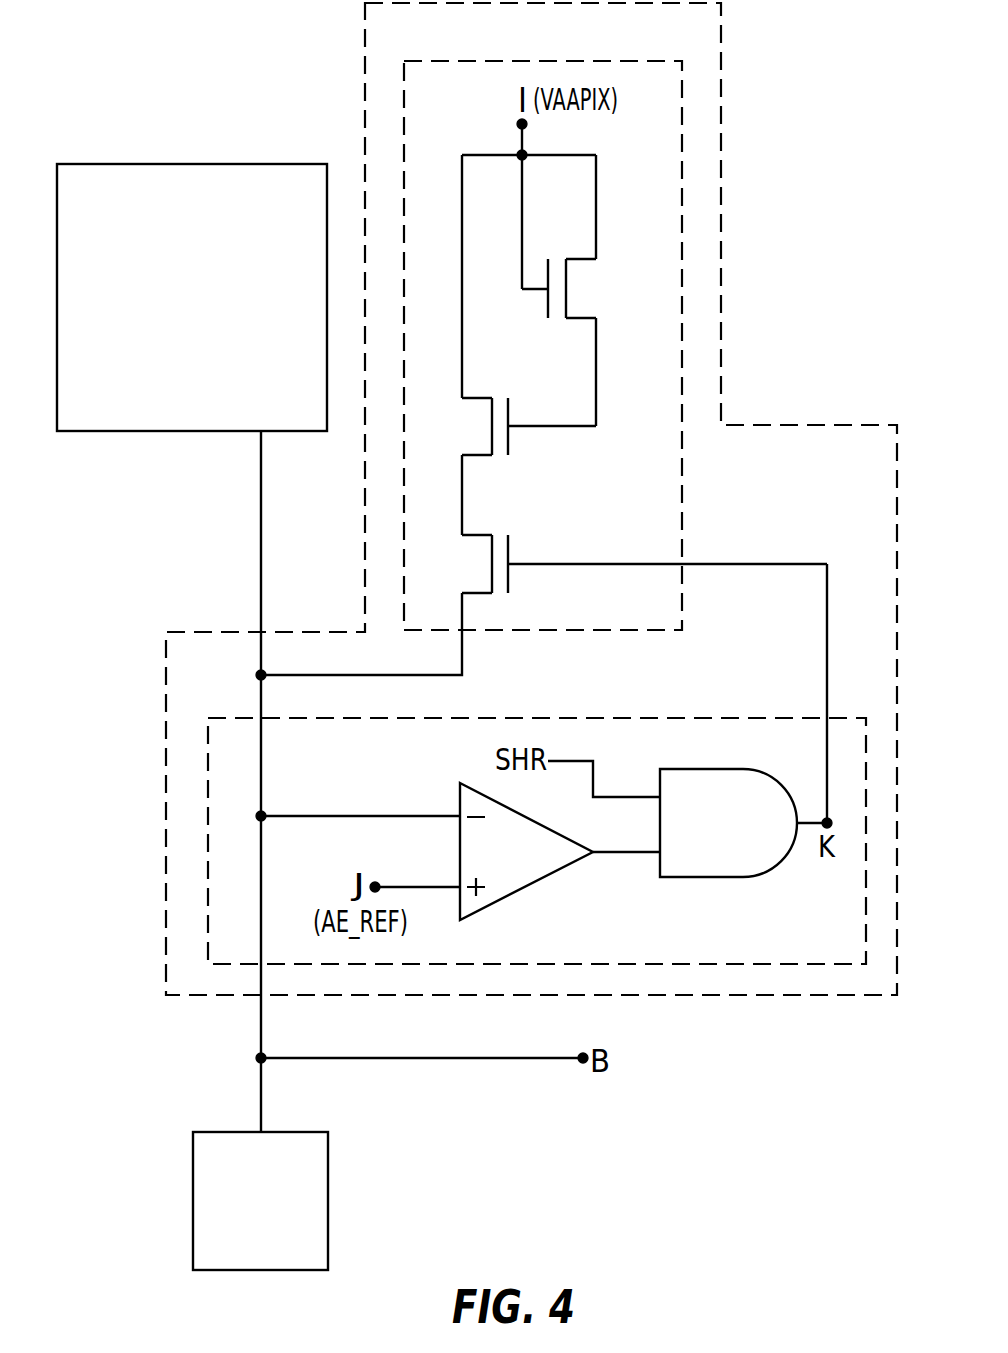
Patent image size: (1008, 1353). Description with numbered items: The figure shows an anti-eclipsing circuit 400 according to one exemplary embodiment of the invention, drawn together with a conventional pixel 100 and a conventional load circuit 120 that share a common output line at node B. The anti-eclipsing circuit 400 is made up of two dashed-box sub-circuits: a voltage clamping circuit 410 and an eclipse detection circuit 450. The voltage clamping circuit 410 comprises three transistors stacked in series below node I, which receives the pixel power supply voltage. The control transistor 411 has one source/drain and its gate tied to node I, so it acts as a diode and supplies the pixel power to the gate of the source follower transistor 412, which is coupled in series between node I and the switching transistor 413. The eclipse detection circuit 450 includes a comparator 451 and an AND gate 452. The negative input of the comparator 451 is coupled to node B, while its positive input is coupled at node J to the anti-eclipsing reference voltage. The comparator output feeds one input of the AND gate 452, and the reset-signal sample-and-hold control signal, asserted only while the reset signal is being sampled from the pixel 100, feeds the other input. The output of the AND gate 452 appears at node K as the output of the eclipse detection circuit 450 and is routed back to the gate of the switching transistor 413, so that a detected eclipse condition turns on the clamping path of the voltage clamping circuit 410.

The pixel 100 is at (211, 334).
The load circuit 120 is at (284, 1248).
The anti-eclipsing circuit 400 is at (724, 97).
The voltage clamping circuit 410 is at (493, 61).
The control transistor 411 is at (578, 258).
The source follower transistor 412 is at (482, 398).
The switching transistor 413 is at (482, 535).
The eclipse detection circuit 450 is at (605, 717).
The comparator 451 is at (527, 867).
The AND gate 452 is at (742, 837).